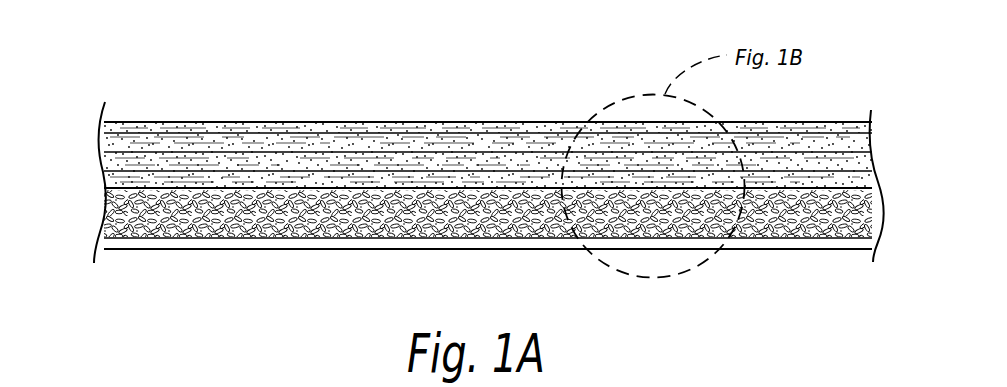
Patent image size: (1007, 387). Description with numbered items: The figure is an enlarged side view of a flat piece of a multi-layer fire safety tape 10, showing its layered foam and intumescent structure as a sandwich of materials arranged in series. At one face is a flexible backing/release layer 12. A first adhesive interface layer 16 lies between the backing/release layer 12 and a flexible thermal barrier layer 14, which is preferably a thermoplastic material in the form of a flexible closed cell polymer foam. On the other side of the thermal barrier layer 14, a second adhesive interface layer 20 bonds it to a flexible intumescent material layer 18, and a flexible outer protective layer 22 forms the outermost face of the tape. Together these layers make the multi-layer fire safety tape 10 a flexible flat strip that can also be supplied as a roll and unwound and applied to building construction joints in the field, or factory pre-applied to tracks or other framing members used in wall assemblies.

The multi-layer fire safety tape 10 is at (488, 169).
The backing/release layer 12 is at (155, 245).
The thermal barrier layer 14 is at (488, 205).
The first adhesive interface layer 16 is at (182, 240).
The intumescent material layer 18 is at (63, 163).
The second adhesive interface layer 20 is at (270, 192).
The outer protective layer 22 is at (217, 128).